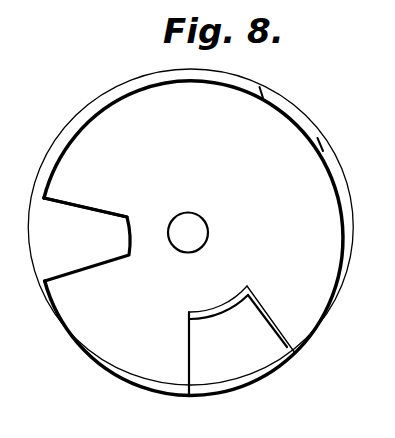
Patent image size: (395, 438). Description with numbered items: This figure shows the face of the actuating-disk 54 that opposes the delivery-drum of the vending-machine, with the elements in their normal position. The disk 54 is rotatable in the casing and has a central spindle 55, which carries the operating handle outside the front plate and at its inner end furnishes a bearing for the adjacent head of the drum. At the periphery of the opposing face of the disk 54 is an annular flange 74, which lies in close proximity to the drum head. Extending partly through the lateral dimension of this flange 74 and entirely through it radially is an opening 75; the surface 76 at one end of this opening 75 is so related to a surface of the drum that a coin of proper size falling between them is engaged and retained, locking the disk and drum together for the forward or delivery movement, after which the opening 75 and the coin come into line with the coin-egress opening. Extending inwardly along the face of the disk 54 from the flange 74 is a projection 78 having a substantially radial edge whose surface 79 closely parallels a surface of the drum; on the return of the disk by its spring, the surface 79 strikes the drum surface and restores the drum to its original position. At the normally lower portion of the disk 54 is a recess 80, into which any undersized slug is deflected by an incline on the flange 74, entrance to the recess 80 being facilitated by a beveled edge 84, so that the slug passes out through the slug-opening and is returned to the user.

The annular flange 74 is at (133, 88).
The actuating-disk 54 is at (193, 238).
The opening 75 is at (288, 106).
The surface 76 is at (316, 143).
The projection 78 is at (87, 239).
The surface 79 is at (70, 213).
The central spindle 55 is at (204, 240).
The recess 80 is at (222, 341).
The beveled edge 84 is at (281, 318).